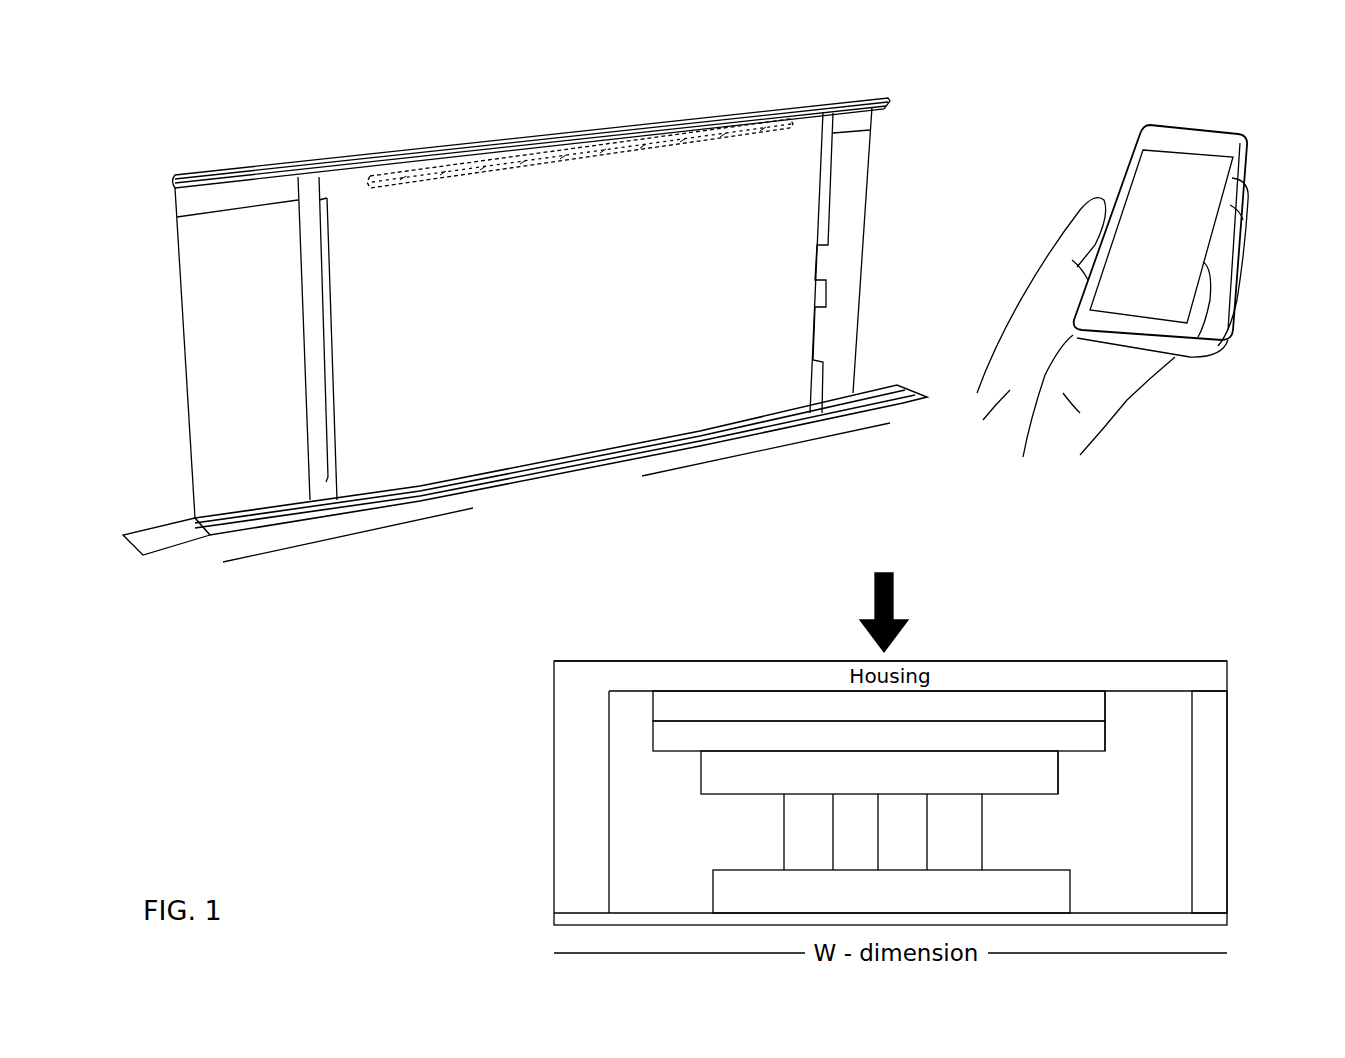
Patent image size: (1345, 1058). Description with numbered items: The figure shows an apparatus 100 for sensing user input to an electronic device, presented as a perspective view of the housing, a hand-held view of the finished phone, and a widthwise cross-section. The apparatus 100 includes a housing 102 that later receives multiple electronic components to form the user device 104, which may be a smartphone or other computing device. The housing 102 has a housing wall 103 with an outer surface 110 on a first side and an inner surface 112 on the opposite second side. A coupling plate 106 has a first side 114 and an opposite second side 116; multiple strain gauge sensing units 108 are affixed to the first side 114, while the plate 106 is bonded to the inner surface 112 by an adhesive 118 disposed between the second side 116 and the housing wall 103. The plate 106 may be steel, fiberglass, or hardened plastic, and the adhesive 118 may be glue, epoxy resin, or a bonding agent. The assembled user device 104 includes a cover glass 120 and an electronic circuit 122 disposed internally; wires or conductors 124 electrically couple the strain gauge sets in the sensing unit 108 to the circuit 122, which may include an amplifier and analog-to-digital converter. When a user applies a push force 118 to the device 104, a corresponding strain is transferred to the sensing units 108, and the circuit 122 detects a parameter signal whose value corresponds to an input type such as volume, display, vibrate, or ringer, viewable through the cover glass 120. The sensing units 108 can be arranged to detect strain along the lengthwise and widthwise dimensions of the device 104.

The apparatus 100 is at (262, 88).
The housing 102 is at (395, 152).
The housing wall 103 is at (653, 122).
The user device 104 is at (1190, 118).
The coupling plate 106 is at (760, 138).
The sensing unit 108 is at (558, 173).
The outer surface 110 is at (533, 135).
The inner surface 112 is at (348, 170).
The first side 114 is at (1072, 755).
The second side 116 is at (1047, 720).
The adhesive 118 is at (1113, 193).
The cover glass 120 is at (1203, 160).
The electronic circuit 122 is at (891, 891).
The wires/conductors 124 is at (784, 857).